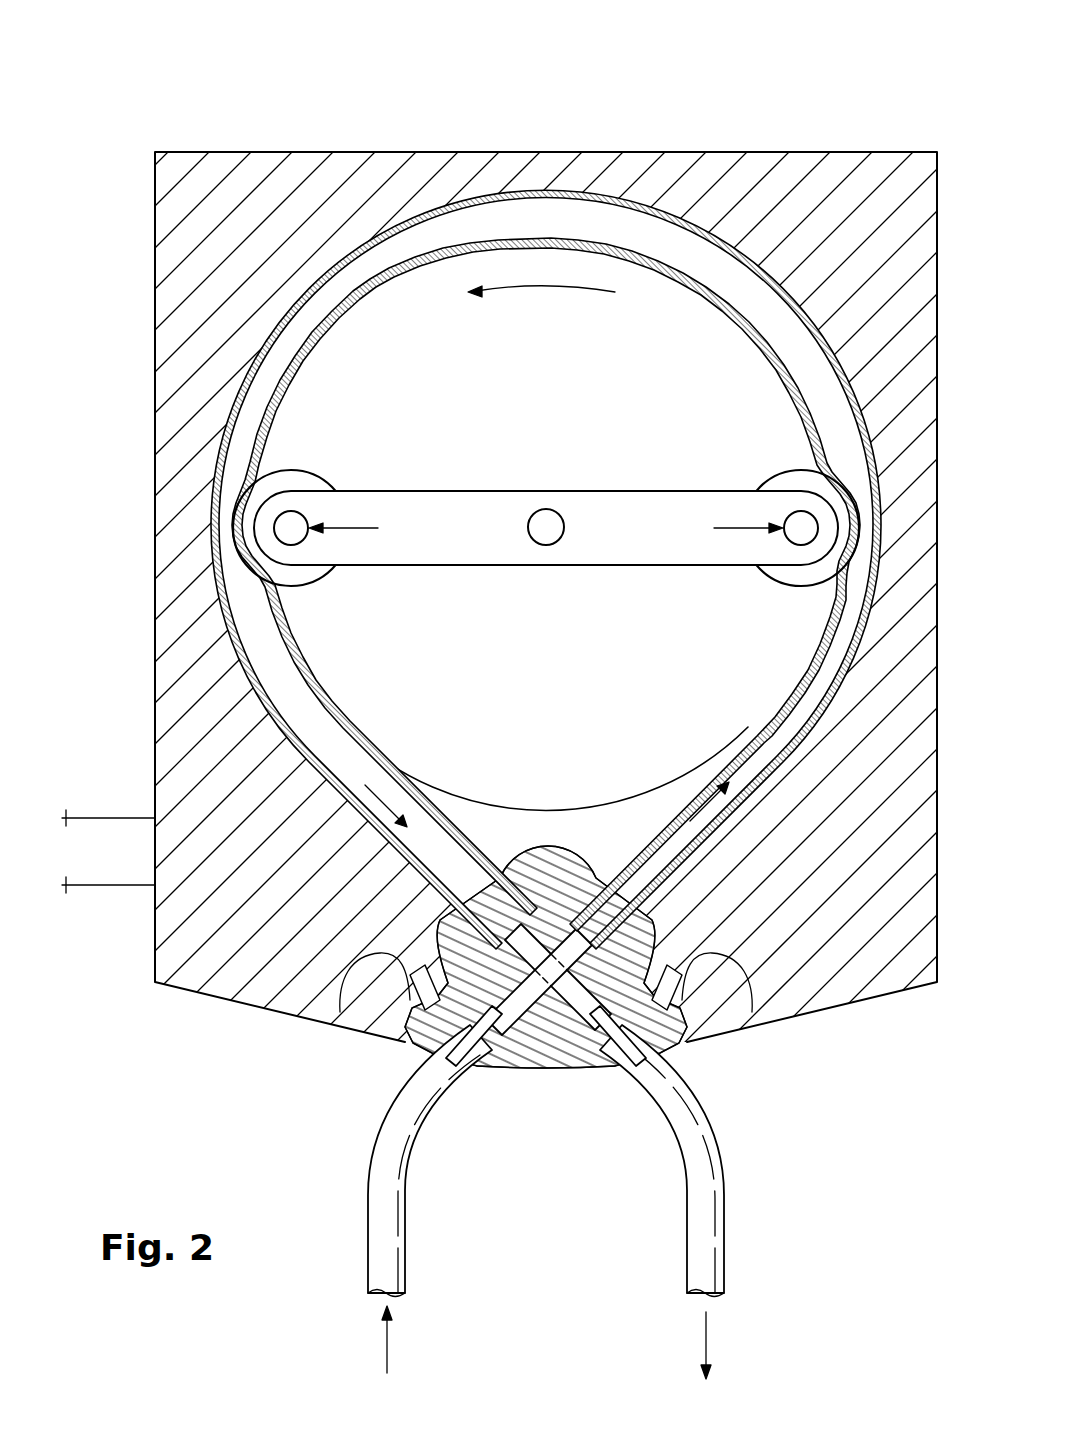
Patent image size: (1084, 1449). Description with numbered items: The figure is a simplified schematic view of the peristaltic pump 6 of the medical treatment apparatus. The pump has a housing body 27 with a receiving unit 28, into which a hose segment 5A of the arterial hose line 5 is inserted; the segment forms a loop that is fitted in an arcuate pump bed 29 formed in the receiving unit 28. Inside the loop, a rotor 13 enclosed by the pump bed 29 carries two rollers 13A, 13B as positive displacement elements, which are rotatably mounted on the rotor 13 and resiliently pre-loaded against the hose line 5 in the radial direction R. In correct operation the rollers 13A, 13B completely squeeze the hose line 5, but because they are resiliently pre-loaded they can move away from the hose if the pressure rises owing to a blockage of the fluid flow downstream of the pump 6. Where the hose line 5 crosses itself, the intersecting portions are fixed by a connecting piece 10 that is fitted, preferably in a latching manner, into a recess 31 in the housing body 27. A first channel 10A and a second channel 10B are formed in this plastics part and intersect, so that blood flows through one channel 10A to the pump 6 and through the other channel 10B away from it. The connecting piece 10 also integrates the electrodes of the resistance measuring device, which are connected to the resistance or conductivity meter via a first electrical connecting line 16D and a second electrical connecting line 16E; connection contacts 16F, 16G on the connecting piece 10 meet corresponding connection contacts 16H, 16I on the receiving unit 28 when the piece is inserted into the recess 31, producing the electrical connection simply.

The peristaltic pump 6 is at (499, 692).
The housing body 27 is at (848, 154).
The hose segment 5A is at (487, 515).
The pump bed 29 is at (537, 208).
The receiving unit 28 is at (362, 380).
The radial direction R is at (360, 528).
The rotor 13 is at (546, 526).
The roller 13A is at (298, 580).
The roller 13B is at (794, 580).
The second electrical connecting line 16E is at (112, 812).
The first electrical connecting line 16D is at (112, 890).
The connection contact 16H is at (340, 1010).
The connection contact 16I is at (762, 1008).
The connection contact 16F is at (378, 1030).
The connection contact 16G is at (735, 1008).
The connecting piece 10 is at (547, 997).
The first channel 10A is at (525, 1012).
The second channel 10B is at (440, 1040).
The recess 31 is at (648, 1040).
The arterial hose line 5 is at (385, 1222).